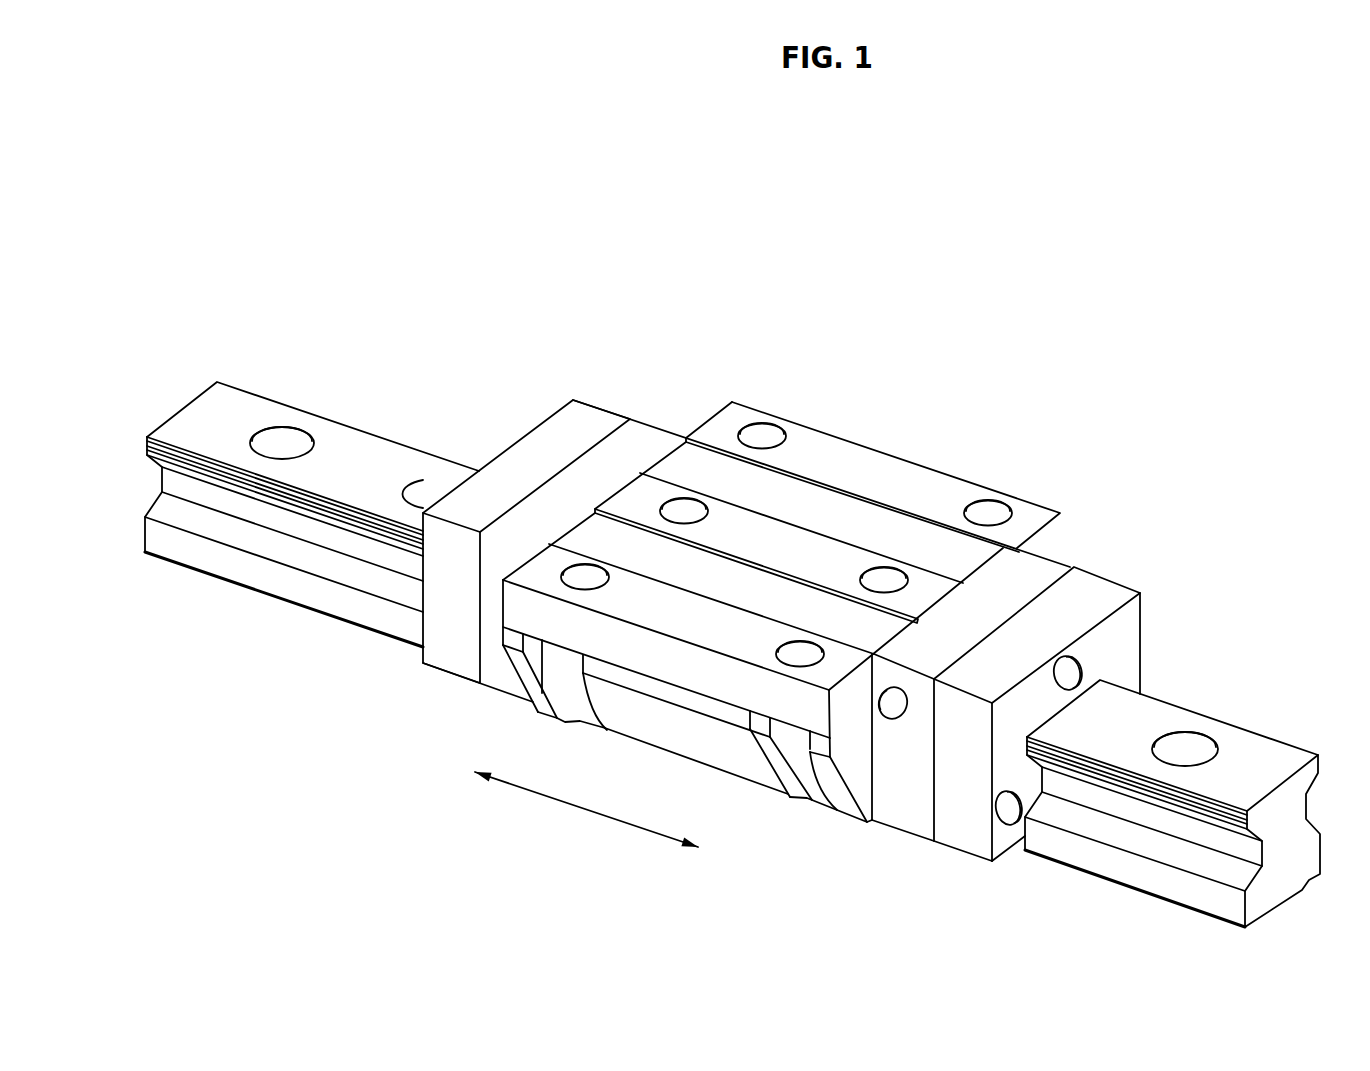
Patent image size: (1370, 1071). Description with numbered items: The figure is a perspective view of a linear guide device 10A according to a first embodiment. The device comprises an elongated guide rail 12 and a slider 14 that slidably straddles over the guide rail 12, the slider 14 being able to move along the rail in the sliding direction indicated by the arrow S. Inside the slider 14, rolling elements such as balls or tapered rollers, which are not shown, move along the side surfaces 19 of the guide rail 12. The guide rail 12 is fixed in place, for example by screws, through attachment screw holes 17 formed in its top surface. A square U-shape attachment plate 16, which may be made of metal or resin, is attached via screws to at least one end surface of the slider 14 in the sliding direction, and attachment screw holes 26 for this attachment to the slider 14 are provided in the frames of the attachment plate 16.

The linear guide device 10A is at (458, 285).
The guide rail 12 is at (363, 458).
The slider 14 is at (868, 440).
The attachment plate 16 is at (582, 423).
The attachment screw hole 17 is at (283, 443).
The side surfaces 19 is at (275, 517).
The attachment screw holes 26 is at (1007, 807).